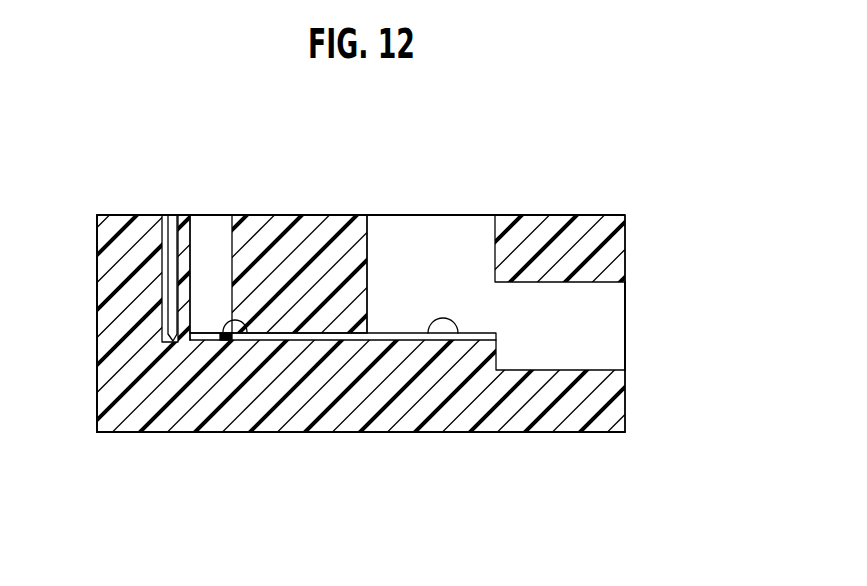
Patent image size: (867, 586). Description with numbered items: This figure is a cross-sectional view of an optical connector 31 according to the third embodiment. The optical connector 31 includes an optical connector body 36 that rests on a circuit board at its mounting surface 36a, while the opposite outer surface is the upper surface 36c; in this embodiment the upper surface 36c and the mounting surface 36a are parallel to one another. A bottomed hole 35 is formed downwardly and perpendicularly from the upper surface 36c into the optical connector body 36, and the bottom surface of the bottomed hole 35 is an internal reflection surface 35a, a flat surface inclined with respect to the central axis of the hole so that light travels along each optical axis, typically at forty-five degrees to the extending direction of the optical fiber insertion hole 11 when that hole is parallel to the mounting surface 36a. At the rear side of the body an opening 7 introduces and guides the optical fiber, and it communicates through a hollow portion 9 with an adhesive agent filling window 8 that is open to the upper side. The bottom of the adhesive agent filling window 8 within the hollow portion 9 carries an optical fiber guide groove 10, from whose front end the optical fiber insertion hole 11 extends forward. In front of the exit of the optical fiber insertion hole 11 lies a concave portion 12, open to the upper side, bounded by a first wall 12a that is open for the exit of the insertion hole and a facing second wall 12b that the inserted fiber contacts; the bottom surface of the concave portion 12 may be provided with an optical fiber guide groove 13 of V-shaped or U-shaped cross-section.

The optical connector 31 is at (562, 163).
The optical connector body 36 is at (336, 268).
The mounting surface 36a is at (312, 432).
The upper surface 36c is at (118, 215).
The bottomed hole 35 is at (168, 232).
The internal reflection surface 35a is at (176, 342).
The concave portion 12 is at (225, 232).
The first wall 12a is at (241, 320).
The second wall 12b is at (213, 330).
The optical fiber insertion hole 11 is at (292, 330).
The optical fiber guide groove 13 is at (240, 340).
The hollow portion 9 is at (409, 243).
The adhesive agent filling window 8 is at (455, 233).
The opening 7 is at (610, 342).
The optical fiber guide groove 10 is at (452, 340).